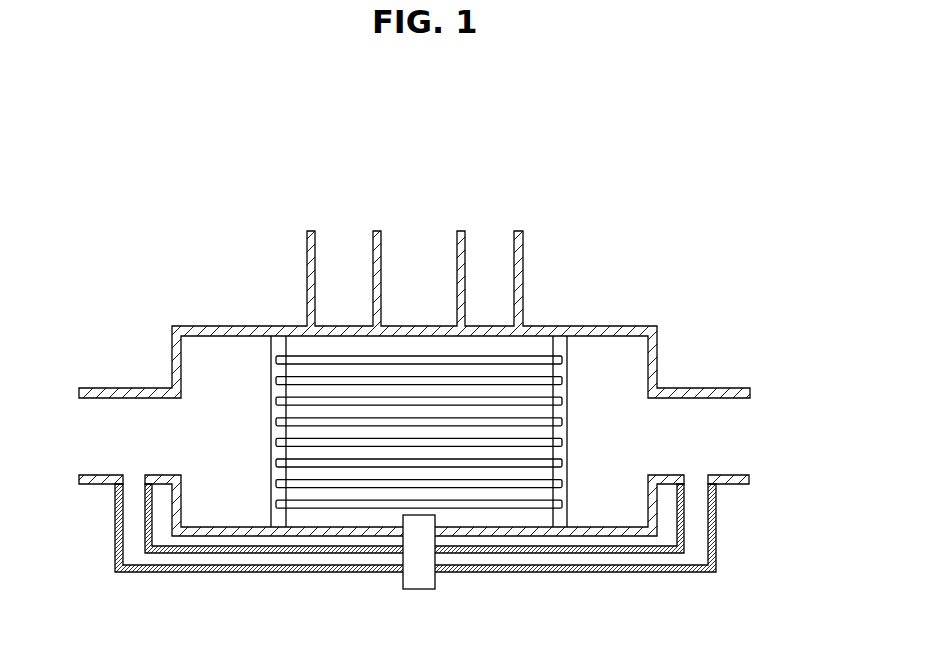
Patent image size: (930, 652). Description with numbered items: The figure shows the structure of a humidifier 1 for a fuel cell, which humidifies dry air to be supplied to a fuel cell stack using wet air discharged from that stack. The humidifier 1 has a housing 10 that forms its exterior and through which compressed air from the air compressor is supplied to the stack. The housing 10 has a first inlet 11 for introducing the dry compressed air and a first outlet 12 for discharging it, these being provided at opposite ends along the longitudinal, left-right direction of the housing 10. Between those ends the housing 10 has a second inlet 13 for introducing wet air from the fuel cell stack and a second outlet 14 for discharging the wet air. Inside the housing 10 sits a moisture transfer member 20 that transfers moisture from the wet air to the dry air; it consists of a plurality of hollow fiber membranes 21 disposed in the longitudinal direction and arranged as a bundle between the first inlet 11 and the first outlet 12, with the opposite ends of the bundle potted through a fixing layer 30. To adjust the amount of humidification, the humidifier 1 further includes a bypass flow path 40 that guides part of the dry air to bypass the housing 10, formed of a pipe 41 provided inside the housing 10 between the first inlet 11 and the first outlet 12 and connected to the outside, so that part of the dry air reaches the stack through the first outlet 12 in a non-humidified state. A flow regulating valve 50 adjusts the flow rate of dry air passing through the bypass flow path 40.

The humidifier for a fuel cell 1 is at (452, 127).
The housing 10 is at (195, 311).
The first inlet 11 is at (101, 447).
The first outlet 12 is at (737, 447).
The second inlet 13 is at (500, 257).
The second outlet 14 is at (353, 257).
The moisture transfer member 20 is at (326, 489).
The hollow fiber membrane 21 is at (335, 487).
The fixing layer 30 is at (568, 352).
The bypass flow path 40 is at (701, 525).
The pipe 41 is at (714, 560).
The flow regulating valve 50 is at (428, 542).